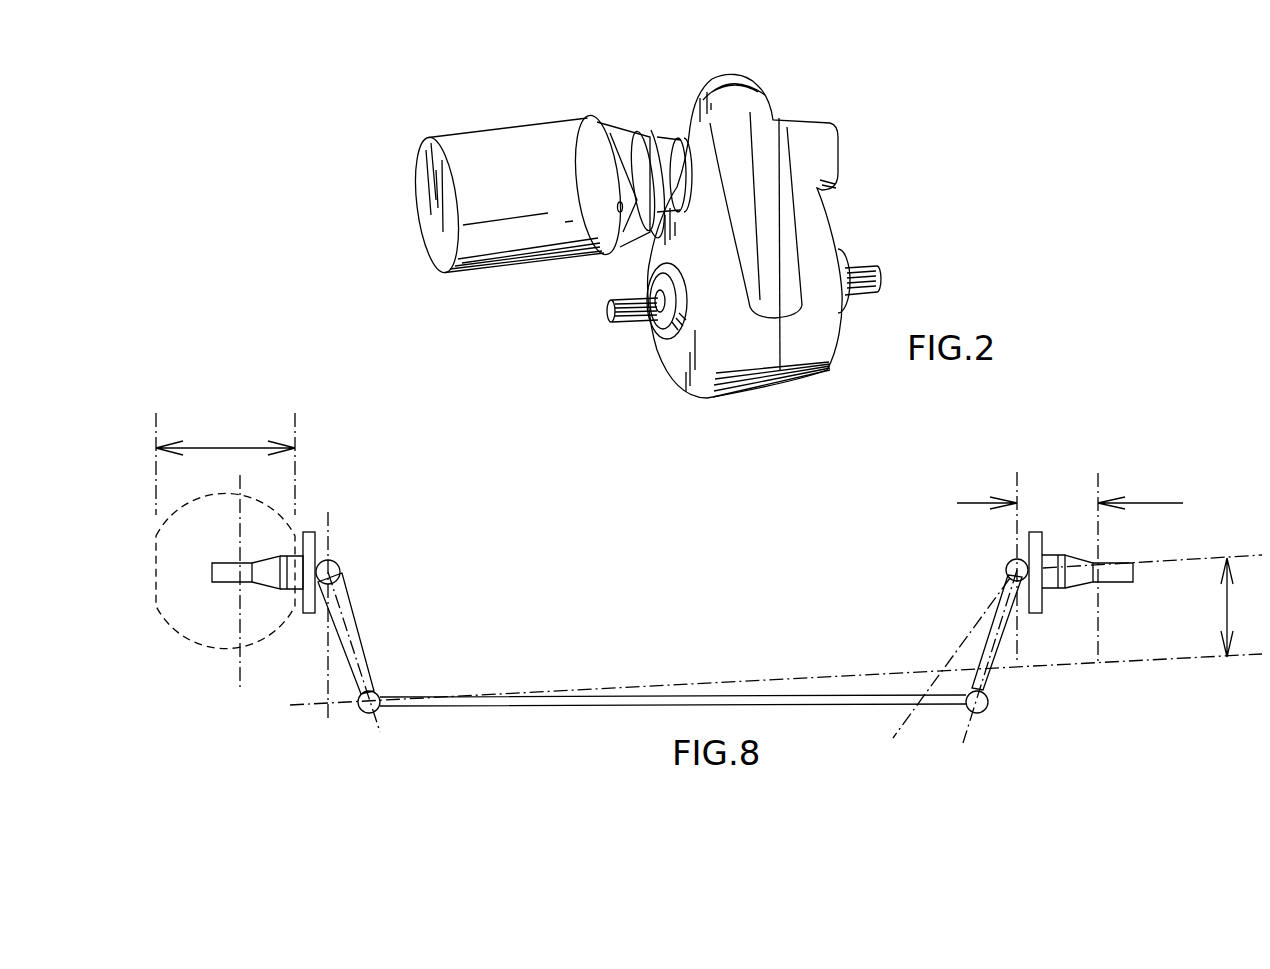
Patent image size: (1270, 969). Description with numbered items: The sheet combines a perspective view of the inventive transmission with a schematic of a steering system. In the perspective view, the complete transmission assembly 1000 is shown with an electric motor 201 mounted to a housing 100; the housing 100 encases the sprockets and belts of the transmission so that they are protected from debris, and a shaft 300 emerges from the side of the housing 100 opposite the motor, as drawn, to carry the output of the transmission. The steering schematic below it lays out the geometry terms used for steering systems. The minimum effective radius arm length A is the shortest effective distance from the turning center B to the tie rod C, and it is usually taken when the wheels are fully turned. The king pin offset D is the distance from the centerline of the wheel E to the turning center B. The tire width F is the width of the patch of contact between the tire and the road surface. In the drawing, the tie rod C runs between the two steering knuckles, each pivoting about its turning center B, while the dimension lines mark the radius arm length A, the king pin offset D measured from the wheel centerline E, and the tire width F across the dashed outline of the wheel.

In FIG. 2, the motor-driven steering actuator assembly 1000 is at (858, 117).
In FIG. 2, the electric motor 201 is at (515, 160).
In FIG. 2, the housing 100 is at (830, 223).
In FIG. 2, the output shaft 300 is at (878, 272).
In FIG. 8, the minimum effective radius arm length A is at (1216, 607).
In FIG. 8, the turning center B is at (1010, 566).
In FIG. 8, the tie rod C is at (600, 708).
In FIG. 8, the king pin offset D is at (1070, 503).
In FIG. 8, the centerline of the wheel E is at (1098, 480).
In FIG. 8, the tire width F is at (225, 437).